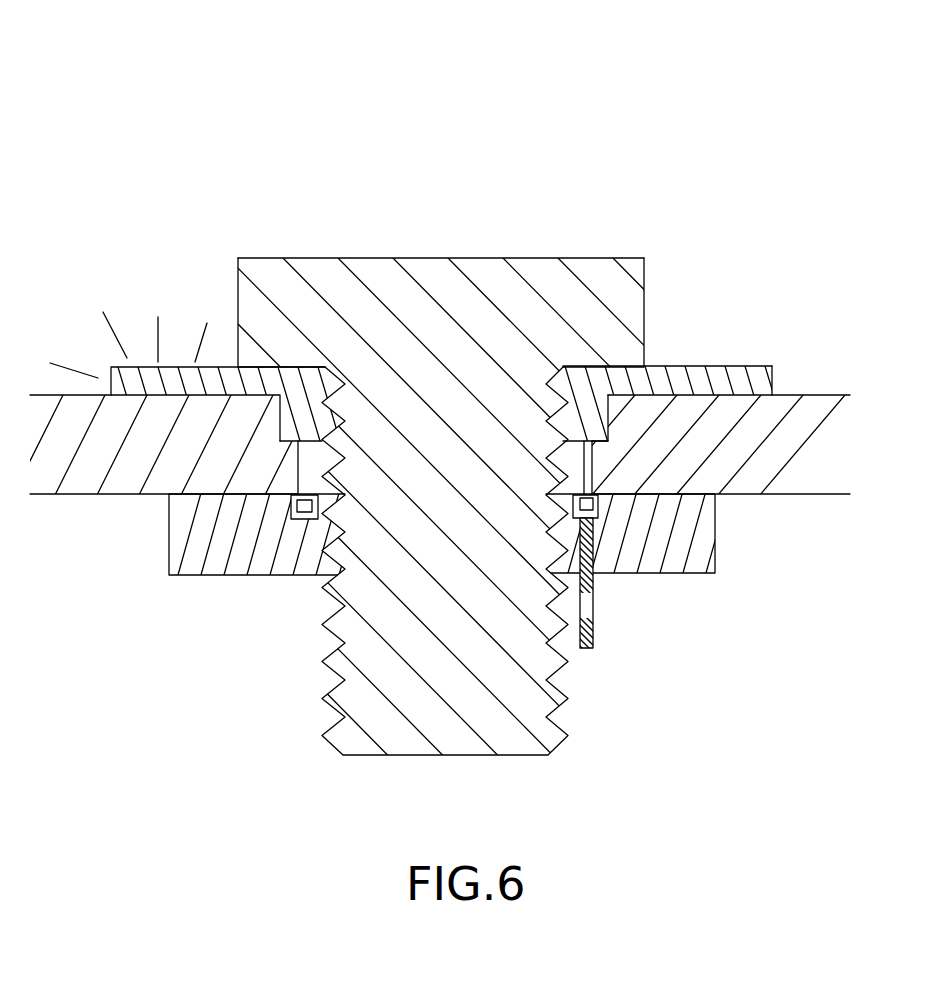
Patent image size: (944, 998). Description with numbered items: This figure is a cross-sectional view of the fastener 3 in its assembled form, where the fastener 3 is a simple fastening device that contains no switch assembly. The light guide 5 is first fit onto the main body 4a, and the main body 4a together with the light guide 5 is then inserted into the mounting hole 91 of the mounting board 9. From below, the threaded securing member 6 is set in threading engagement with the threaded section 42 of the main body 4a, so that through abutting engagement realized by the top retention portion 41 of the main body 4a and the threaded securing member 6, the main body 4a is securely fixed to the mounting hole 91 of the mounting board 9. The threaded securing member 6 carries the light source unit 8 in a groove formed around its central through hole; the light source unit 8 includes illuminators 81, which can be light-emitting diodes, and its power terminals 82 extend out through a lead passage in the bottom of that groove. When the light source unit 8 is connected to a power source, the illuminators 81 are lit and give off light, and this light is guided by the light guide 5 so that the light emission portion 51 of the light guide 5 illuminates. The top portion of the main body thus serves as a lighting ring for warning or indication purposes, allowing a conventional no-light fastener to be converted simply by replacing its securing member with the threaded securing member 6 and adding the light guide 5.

The fastener 3 is at (175, 102).
The main body 4a is at (588, 237).
The top retention portion 41 is at (645, 298).
The threaded section 42 is at (578, 690).
The light guide 5 is at (716, 365).
The light emission portion 51 is at (773, 373).
The threaded securing member 6 is at (675, 540).
The light source unit 8 is at (600, 523).
The illuminators 81 is at (600, 473).
The power terminals 82 is at (597, 628).
The mounting board 9 is at (725, 470).
The mounting hole 91 is at (600, 478).